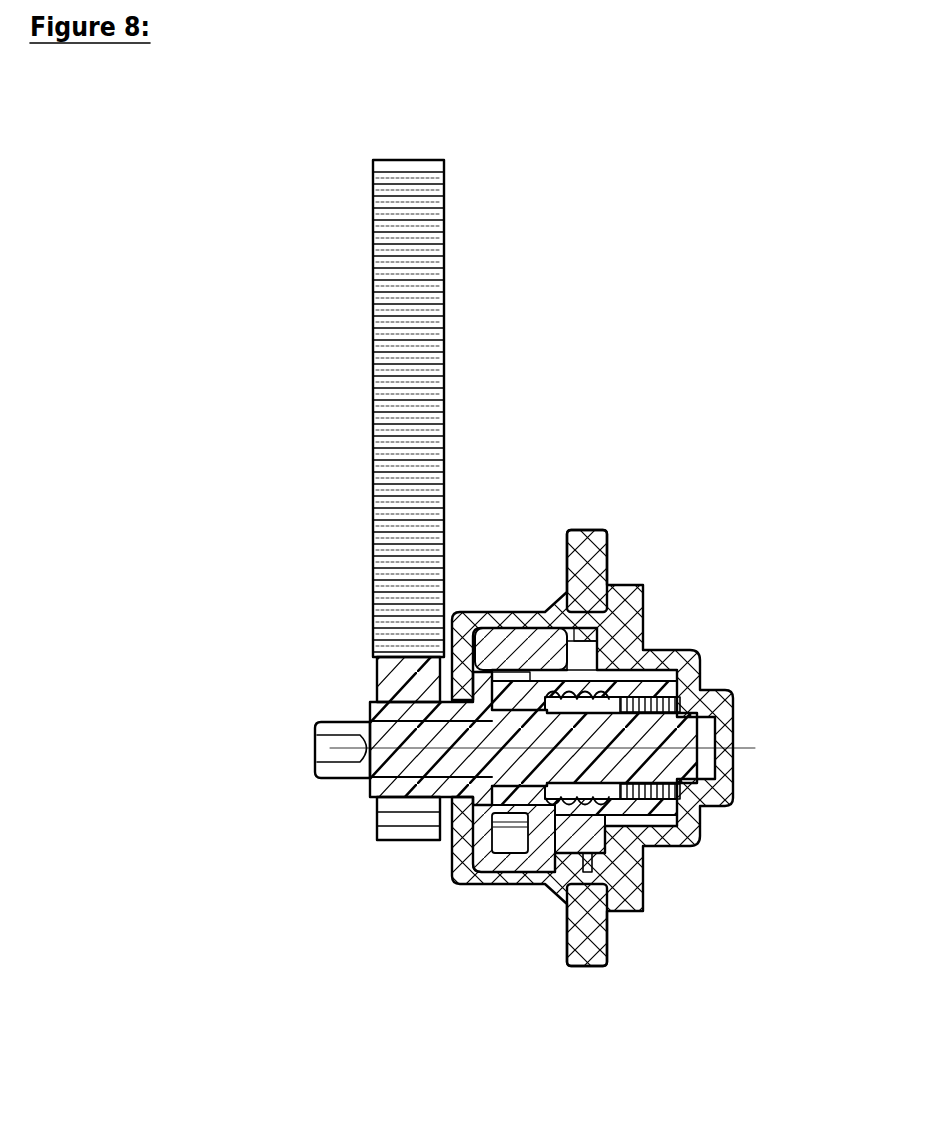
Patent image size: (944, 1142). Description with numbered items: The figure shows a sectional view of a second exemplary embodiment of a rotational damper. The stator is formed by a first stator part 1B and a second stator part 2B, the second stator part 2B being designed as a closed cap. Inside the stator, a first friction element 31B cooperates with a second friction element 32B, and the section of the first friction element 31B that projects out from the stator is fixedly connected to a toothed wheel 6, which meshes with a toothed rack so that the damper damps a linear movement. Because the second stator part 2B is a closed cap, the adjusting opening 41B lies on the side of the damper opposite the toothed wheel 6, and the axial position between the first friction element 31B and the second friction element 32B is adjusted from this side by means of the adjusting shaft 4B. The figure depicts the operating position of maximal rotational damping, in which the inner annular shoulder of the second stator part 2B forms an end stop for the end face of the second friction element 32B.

The first stator part 1B is at (608, 540).
The second stator part 2B is at (688, 667).
The adjusting shaft 4B is at (697, 733).
The toothed wheel 6 is at (407, 835).
The first friction element 31B is at (537, 648).
The second friction element 32B is at (587, 830).
The adjusting opening 41B is at (338, 740).